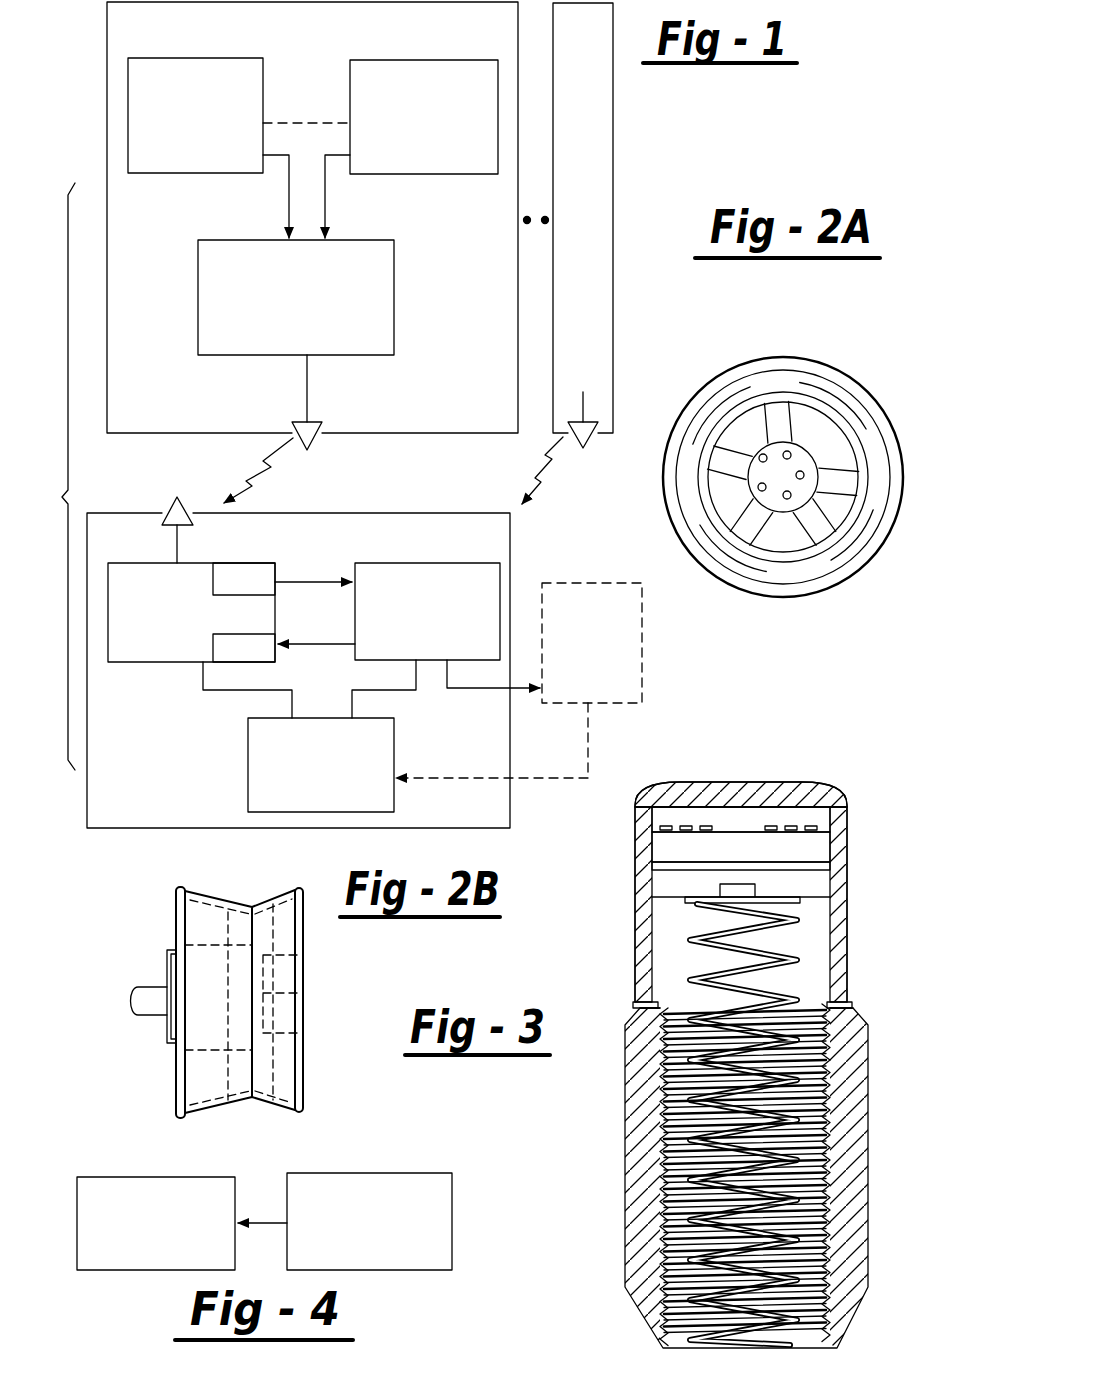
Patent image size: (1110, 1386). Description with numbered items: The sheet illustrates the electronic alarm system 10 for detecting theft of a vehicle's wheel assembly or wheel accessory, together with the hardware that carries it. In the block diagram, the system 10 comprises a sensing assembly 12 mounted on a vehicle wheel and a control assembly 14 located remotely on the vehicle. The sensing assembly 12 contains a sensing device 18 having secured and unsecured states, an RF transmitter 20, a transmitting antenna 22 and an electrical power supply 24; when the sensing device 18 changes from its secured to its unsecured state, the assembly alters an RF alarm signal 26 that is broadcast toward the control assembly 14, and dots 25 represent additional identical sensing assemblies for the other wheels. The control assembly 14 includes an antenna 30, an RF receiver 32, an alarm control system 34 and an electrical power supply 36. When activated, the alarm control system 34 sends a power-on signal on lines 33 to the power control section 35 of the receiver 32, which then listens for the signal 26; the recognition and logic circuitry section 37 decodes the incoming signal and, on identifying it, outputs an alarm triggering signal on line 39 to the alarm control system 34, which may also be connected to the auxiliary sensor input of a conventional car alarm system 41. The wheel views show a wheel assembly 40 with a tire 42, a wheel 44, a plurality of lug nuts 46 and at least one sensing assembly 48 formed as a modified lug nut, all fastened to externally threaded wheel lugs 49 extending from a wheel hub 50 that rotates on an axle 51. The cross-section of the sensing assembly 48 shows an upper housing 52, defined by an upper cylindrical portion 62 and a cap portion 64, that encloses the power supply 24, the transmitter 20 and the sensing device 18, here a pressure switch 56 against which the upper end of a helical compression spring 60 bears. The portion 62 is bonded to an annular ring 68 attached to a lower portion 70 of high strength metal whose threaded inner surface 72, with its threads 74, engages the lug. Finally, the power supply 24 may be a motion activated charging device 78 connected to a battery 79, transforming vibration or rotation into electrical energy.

In FIG. 1, the electronic alarm system 10 is at (51, 476).
In FIG. 1, the sensing assembly 12 is at (100, 120).
In FIG. 1, the control assembly 14 is at (178, 793).
In FIG. 1, the sensing device 18 is at (205, 58).
In FIG. 1, the RF transmitter 20 is at (394, 338).
In FIG. 3, the RF transmitter 20 is at (672, 846).
In FIG. 1, the transmitting antenna 22 is at (318, 428).
In FIG. 1, the electrical power supply 24 is at (414, 174).
In FIG. 3, the electrical power supply 24 is at (696, 813).
In FIG. 1, the dots 25 is at (536, 228).
In FIG. 1, the RF alarm signal 26 is at (250, 472).
In FIG. 1, the antenna 30 is at (168, 505).
In FIG. 1, the RF receiver 32 is at (213, 563).
In FIG. 1, the lines 33 is at (309, 689).
In FIG. 1, the alarm control system 34 is at (388, 563).
In FIG. 1, the power control section 35 is at (258, 662).
In FIG. 1, the electrical power supply 36 is at (394, 758).
In FIG. 1, the recognition and logic circuitry section 37 is at (275, 568).
In FIG. 1, the line 39 is at (291, 583).
In FIG. 2A, the wheel assembly 40 is at (823, 335).
In FIG. 1, the conventional car alarm system 41 is at (642, 692).
In FIG. 2A, the tire 42 is at (672, 498).
In FIG. 2A, the wheel 44 is at (772, 493).
In FIG. 2B, the wheel 44 is at (208, 903).
In FIG. 2A, the lug nuts 46 is at (762, 452).
In FIG. 2A, the sensing assembly 48 is at (789, 452).
In FIG. 3, the sensing assembly 48 is at (854, 756).
In FIG. 2B, the wheel lugs 49 is at (305, 992).
In FIG. 2B, the wheel hub 50 is at (180, 932).
In FIG. 2B, the axle 51 is at (150, 1000).
In FIG. 3, the upper housing 52 is at (847, 813).
In FIG. 3, the pressure switch 56 is at (668, 878).
In FIG. 3, the helical compression spring 60 is at (690, 943).
In FIG. 3, the upper cylindrical portion 62 is at (838, 853).
In FIG. 3, the cap portion 64 is at (777, 790).
In FIG. 3, the annular ring 68 is at (856, 1004).
In FIG. 3, the lower portion 70 is at (640, 1160).
In FIG. 3, the threaded inner surface 72 is at (812, 1122).
In FIG. 3, the threads 74 is at (665, 1085).
In FIG. 4, the motion activated charging device 78 is at (437, 1173).
In FIG. 4, the battery 79 is at (215, 1177).